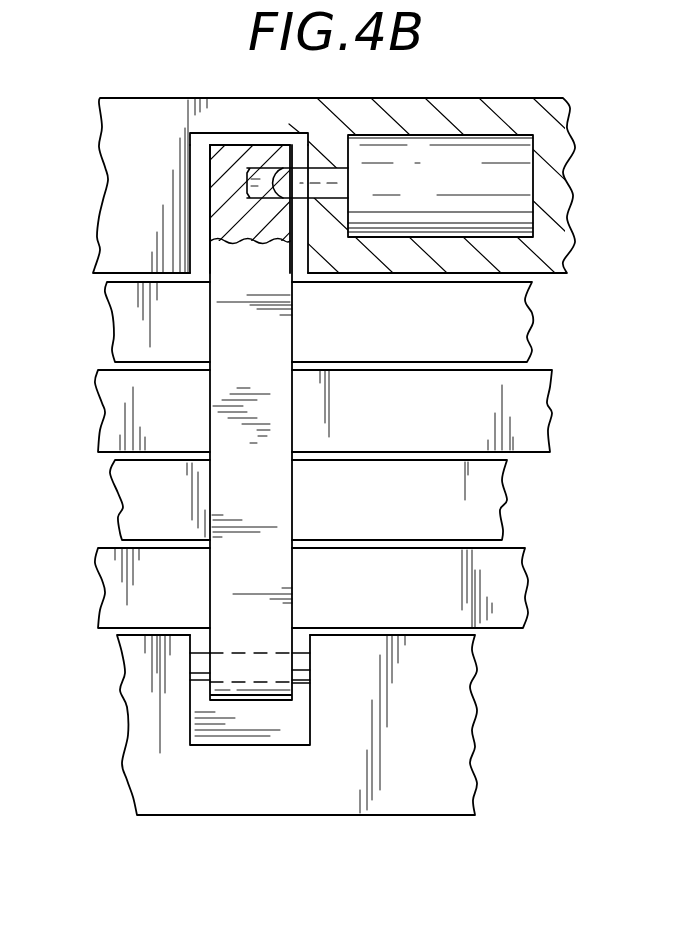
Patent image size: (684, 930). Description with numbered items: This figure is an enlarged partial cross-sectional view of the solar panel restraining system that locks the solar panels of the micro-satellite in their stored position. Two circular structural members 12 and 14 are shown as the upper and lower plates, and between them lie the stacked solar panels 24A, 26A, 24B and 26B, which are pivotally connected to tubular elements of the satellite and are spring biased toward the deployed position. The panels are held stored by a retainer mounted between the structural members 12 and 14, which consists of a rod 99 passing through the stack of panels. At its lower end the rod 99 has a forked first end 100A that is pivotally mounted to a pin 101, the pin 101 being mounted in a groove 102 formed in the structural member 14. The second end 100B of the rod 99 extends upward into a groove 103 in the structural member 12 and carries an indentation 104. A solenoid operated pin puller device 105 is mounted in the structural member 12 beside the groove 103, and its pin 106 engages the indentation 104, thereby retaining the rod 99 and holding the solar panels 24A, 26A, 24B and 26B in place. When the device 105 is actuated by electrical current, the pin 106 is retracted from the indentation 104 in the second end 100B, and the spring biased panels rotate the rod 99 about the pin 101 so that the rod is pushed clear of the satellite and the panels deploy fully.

The circular structural member 12 is at (121, 99).
The circular structural member 14 is at (405, 815).
The solar panel 24A is at (532, 322).
The solar panel 26A is at (552, 412).
The solar panel 24B is at (508, 502).
The solar panel 26B is at (527, 590).
The rod 99 is at (210, 500).
The forked first end 100A is at (245, 700).
The second end 100B is at (210, 172).
The pin 101 is at (200, 684).
The groove 102 is at (294, 745).
The groove 103 is at (194, 136).
The indentation 104 is at (276, 146).
The solenoid operated pin puller device 105 is at (468, 135).
The pin 106 is at (330, 168).